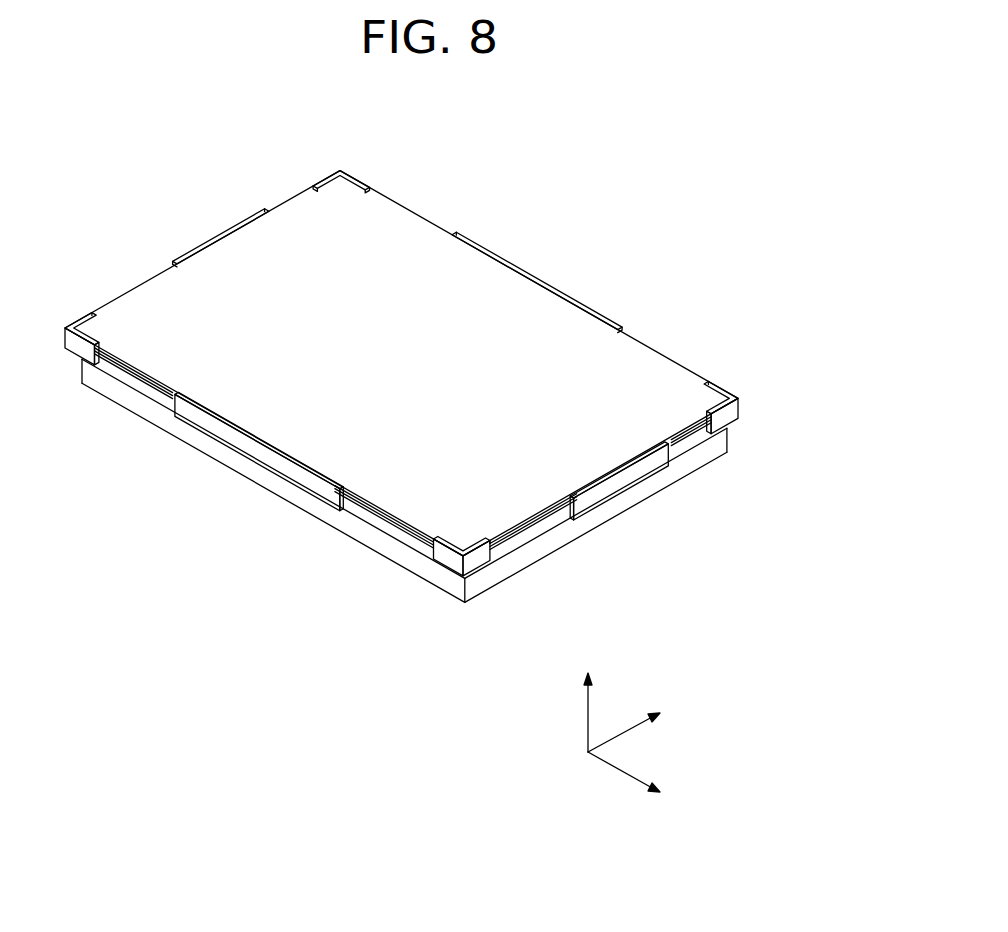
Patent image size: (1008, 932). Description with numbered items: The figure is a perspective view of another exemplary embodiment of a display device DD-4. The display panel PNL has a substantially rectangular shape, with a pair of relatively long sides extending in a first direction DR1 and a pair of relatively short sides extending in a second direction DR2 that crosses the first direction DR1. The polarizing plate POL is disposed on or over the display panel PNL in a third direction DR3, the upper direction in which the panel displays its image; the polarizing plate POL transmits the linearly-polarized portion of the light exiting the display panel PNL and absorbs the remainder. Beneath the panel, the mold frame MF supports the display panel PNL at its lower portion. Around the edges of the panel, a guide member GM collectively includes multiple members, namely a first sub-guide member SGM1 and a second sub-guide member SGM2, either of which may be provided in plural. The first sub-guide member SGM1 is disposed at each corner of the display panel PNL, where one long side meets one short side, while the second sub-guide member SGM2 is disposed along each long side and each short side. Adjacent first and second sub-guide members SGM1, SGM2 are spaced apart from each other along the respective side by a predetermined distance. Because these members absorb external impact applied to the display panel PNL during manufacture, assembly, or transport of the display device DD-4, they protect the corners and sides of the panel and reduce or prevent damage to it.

The display device DD-4 is at (604, 198).
The mold frame MF is at (496, 572).
The display panel PNL is at (549, 513).
The polarizing plate POL is at (499, 528).
The guide member GM is at (838, 418).
The first sub-guide member SGM1 is at (732, 415).
The second sub-guide member SGM2 is at (652, 465).
The first direction DR1 is at (643, 782).
The second direction DR2 is at (642, 723).
The third direction DR3 is at (588, 698).